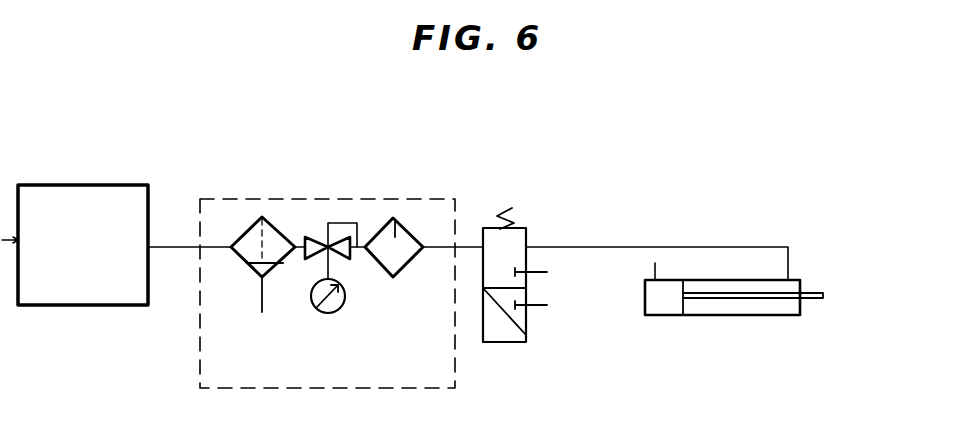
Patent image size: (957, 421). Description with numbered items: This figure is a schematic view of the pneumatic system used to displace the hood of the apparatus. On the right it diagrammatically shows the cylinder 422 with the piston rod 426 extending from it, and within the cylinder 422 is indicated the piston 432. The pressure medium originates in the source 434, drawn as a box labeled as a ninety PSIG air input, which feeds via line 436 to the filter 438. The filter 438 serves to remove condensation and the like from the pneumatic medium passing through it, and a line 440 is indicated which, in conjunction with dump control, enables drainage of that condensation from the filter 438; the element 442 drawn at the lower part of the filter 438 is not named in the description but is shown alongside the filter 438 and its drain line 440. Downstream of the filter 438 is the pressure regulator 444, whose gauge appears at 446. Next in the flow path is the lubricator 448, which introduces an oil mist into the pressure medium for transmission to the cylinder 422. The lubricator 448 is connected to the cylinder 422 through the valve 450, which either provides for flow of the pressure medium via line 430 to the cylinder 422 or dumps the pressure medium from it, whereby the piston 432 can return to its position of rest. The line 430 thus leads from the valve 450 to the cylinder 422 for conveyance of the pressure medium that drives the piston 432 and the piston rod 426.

The source 434 is at (102, 192).
The line 436 is at (172, 250).
The filter 438 is at (277, 226).
The line 440 is at (262, 300).
The water separator / drain 442 is at (272, 270).
The pressure regulator 444 is at (348, 258).
The gauge 446 is at (333, 314).
The lubricator 448 is at (411, 230).
The valve 450 is at (524, 230).
The line 430 is at (768, 246).
The cylinder 422 is at (775, 317).
The piston 432 is at (681, 297).
The piston rod 426 is at (822, 296).